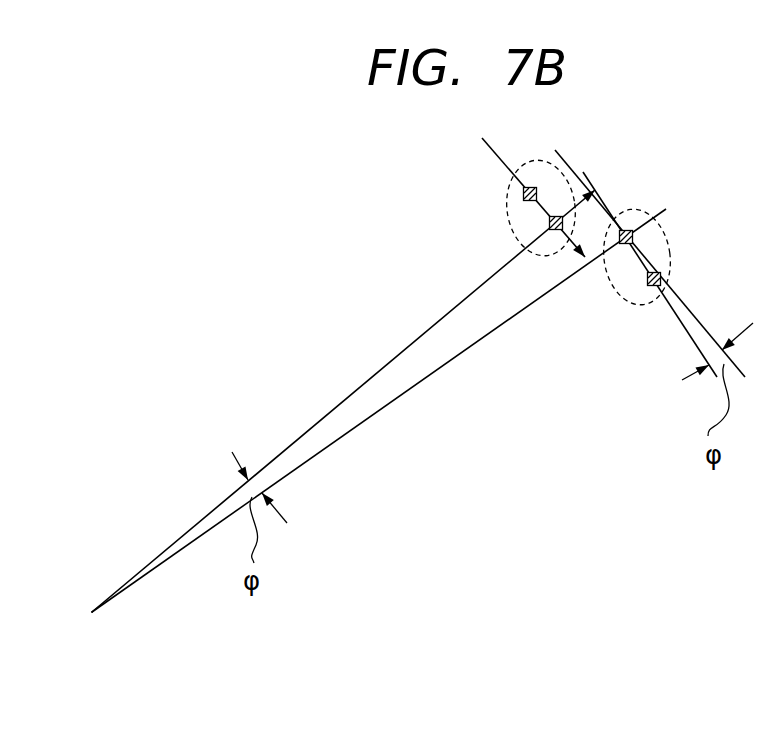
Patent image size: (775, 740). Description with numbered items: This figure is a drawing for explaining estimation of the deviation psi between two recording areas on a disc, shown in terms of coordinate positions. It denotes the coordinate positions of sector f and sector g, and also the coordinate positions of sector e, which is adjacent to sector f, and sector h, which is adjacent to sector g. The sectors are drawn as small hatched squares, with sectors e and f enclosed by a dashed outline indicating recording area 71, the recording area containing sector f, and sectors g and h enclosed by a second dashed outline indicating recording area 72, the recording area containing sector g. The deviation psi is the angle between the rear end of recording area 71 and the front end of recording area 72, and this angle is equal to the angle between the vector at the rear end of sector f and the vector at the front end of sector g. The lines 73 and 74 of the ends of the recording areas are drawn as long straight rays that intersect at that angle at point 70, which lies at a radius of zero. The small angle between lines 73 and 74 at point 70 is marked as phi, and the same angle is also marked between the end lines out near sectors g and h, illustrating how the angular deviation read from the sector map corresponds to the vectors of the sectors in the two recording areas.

The point of radius zero 70 is at (92, 613).
The recording area 71 is at (508, 203).
The recording area 72 is at (670, 243).
The line of the end of the recording area 73 is at (412, 345).
The line of the end of the recording area 74 is at (456, 364).
The sector e is at (530, 187).
The sector f is at (554, 231).
The sector g is at (631, 230).
The sector h is at (653, 287).